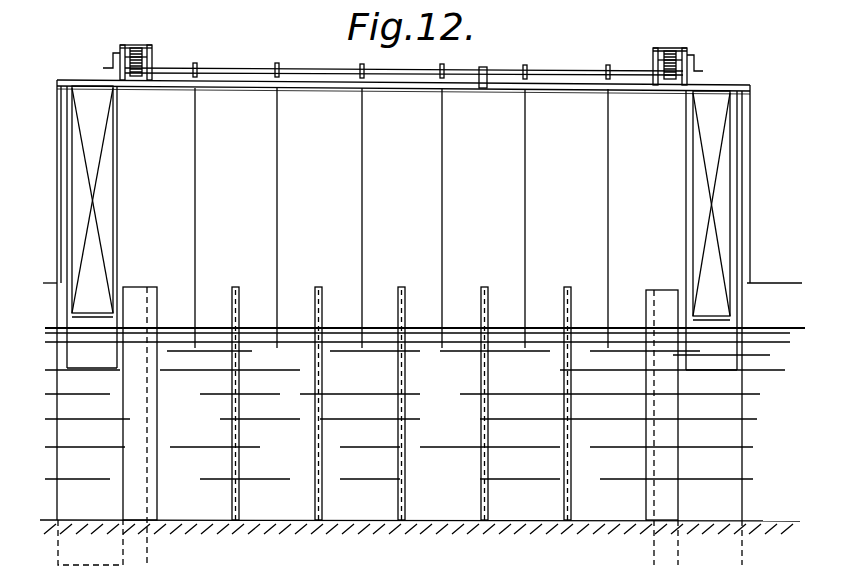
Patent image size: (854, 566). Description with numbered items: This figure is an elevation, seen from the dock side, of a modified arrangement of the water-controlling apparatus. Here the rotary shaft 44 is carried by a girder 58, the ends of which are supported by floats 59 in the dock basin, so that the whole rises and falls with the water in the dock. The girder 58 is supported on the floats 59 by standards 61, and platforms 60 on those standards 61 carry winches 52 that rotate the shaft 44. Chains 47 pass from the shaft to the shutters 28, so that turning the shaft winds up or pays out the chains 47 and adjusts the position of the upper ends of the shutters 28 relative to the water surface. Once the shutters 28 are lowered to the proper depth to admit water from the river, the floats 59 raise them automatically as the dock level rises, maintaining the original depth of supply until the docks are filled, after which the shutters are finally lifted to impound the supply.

The shutter 28 is at (400, 426).
The rotary shaft 44 is at (513, 68).
The chains 47 is at (283, 224).
The winches 52 is at (128, 46).
The girder 58 is at (299, 88).
The floats 59 is at (402, 351).
The platforms 60 is at (72, 80).
The standards 61 is at (72, 132).